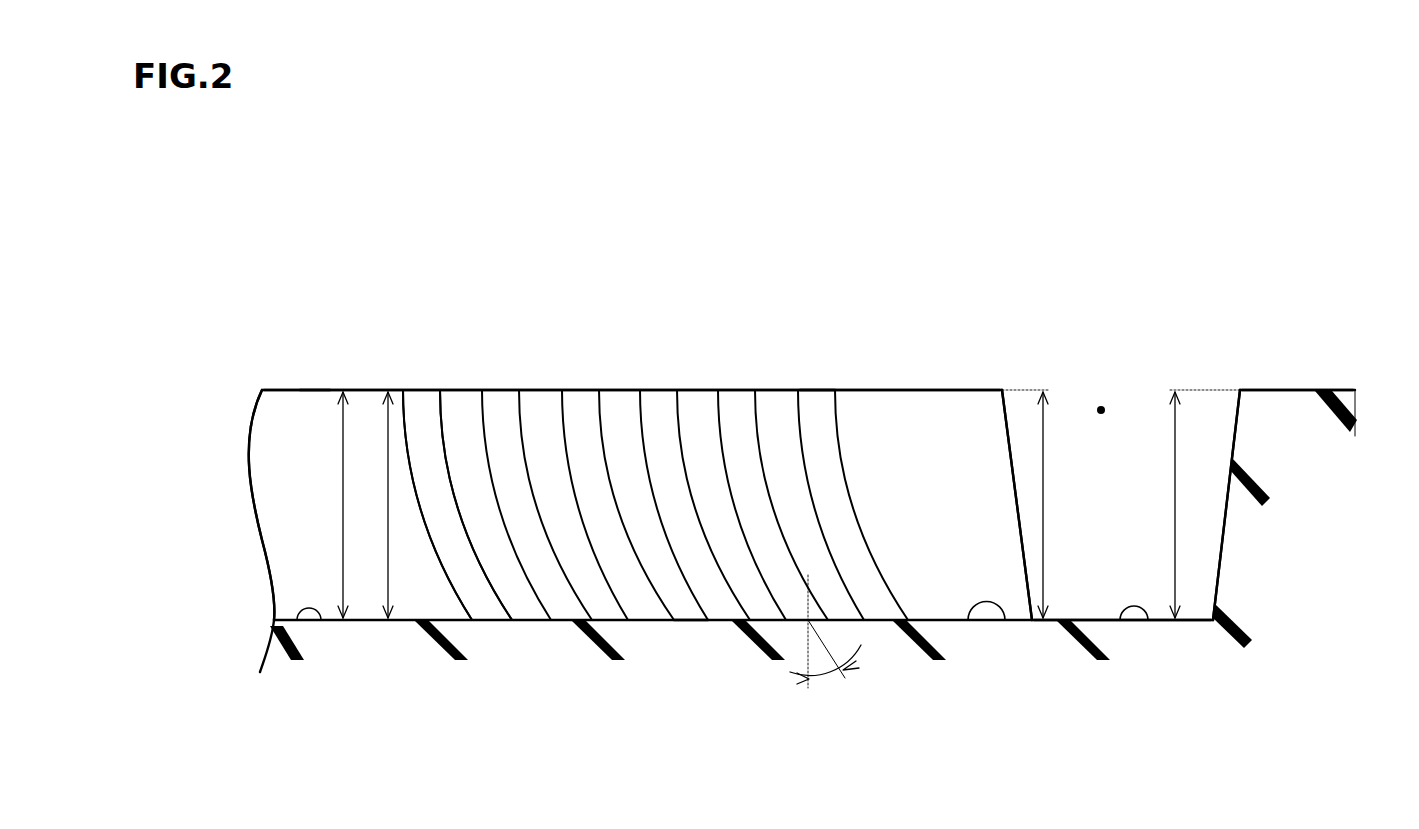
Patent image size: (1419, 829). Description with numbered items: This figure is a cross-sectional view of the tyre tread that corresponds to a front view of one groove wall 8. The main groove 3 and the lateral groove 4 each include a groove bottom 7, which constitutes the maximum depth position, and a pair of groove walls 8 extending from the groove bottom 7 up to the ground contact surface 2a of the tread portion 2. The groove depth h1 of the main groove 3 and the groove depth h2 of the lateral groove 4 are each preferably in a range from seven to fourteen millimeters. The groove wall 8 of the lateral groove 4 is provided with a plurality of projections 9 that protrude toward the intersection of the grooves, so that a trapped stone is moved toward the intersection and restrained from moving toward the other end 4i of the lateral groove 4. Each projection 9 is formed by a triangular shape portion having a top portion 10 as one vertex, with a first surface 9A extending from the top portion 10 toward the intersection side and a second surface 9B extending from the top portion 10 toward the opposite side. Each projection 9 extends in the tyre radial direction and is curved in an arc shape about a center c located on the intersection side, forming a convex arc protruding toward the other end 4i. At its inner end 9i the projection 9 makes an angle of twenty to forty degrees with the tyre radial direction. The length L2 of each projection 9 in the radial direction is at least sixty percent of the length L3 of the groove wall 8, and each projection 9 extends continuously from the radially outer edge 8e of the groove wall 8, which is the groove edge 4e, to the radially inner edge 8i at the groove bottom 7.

The tread portion 2 is at (619, 372).
The ground contact surface 2a is at (696, 390).
The main groove 3 is at (1129, 418).
The lateral groove 4 is at (542, 436).
The groove edge 4e is at (315, 390).
The other end of the lateral groove 4i is at (215, 507).
The groove bottom 7 is at (320, 622).
The groove wall 8 is at (288, 452).
The radially outer edge of the groove wall 8e is at (815, 390).
The radially inner edge of the groove wall 8i is at (1005, 622).
The projection 9 is at (465, 585).
The first surface 9A is at (478, 547).
The second surface 9B is at (441, 535).
The inner end of the projection 9i is at (795, 622).
The top portion 10 is at (706, 562).
The center of the arc c is at (1100, 405).
The groove depth of the main groove h1 is at (1177, 503).
The groove depth of the lateral groove h2 is at (1045, 533).
The length of the projection in the tyre radial direction L2 is at (343, 567).
The length of the groove wall in the tyre radial direction L3 is at (388, 548).